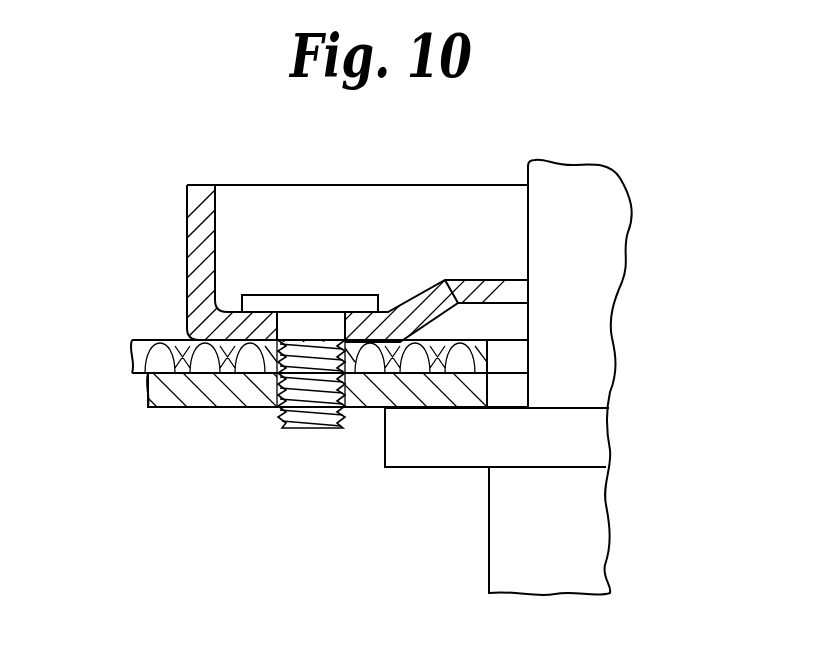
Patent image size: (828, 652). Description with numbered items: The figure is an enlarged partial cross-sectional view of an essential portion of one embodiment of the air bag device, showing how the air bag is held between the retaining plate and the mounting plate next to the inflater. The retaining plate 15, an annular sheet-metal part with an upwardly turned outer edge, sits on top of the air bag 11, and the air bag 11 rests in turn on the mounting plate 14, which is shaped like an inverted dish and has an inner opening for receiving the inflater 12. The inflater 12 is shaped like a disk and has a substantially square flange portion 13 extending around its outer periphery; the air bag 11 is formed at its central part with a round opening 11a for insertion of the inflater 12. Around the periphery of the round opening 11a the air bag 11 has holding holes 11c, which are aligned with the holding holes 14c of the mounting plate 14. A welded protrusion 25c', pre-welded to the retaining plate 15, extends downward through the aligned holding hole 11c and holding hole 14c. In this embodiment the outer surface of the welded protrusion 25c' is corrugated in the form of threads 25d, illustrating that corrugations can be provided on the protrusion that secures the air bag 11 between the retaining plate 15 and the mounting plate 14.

The retaining plate 15 is at (197, 219).
The air bag 11 is at (132, 353).
The mounting plate 14 is at (150, 398).
The holding hole 11c is at (262, 345).
The welded protrusion 25c' is at (310, 300).
The holding hole 14c is at (265, 408).
The threads 25d is at (278, 410).
The inflater 12 is at (600, 300).
The round opening 11a is at (488, 358).
The flange portion 13 is at (592, 432).